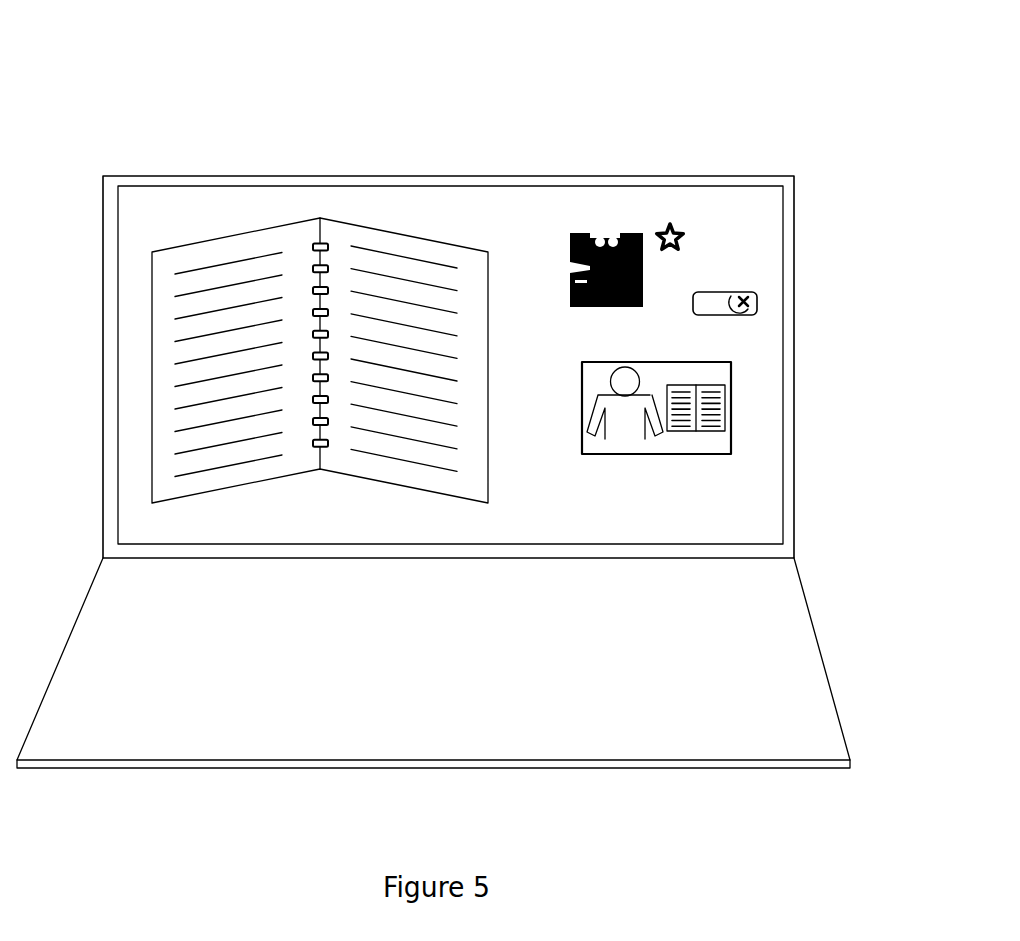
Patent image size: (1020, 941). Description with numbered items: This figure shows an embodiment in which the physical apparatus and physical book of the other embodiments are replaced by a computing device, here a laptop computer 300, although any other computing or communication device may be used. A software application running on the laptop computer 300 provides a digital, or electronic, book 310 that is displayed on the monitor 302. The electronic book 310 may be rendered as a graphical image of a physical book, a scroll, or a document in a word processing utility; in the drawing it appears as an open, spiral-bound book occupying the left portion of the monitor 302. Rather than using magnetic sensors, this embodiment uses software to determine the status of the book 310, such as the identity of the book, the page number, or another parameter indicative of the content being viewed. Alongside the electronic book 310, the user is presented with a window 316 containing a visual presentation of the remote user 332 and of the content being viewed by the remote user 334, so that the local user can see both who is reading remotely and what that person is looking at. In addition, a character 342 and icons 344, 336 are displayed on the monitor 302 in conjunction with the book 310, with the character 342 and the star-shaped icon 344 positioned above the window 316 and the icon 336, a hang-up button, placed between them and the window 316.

The laptop computer 300 is at (387, 100).
The monitor 302 is at (467, 214).
The electronic book 310 is at (225, 238).
The window 316 is at (729, 378).
The remote user 332 is at (603, 388).
The content being viewed by the remote user 334 is at (716, 405).
The icon 336 is at (742, 296).
The character 342 is at (613, 237).
The icon 344 is at (669, 232).